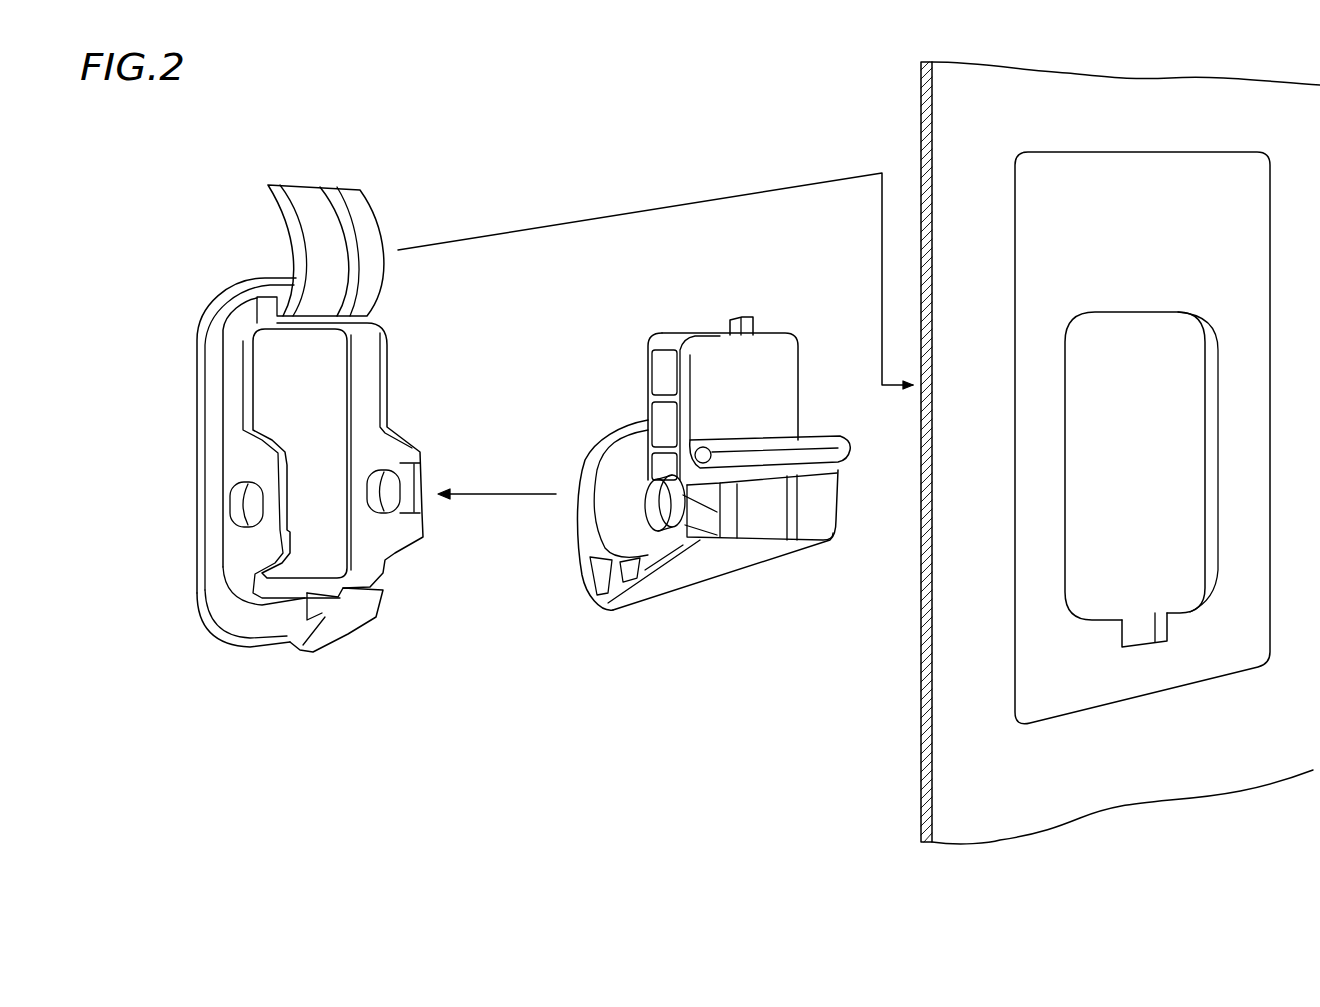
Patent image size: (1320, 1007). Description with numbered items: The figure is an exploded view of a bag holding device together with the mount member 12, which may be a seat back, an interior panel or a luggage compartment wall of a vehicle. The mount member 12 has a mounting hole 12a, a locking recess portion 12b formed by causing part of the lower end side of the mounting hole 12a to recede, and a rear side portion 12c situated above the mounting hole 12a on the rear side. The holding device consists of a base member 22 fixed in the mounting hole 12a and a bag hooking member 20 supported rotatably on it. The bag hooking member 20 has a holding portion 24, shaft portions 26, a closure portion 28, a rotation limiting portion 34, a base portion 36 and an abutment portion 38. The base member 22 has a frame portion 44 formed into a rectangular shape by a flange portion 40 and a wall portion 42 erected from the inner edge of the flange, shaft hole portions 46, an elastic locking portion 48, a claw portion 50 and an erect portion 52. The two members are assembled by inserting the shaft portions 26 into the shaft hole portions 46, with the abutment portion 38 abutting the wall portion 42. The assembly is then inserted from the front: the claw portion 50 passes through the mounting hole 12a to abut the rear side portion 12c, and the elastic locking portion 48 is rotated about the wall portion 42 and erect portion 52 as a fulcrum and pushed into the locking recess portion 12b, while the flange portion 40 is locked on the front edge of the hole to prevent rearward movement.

The mount member 12 is at (1088, 783).
The mounting hole 12a is at (1063, 428).
The locking recess portion 12b is at (1144, 646).
The rear side portion 12c is at (1142, 200).
The bag hooking member 20 is at (670, 646).
The base member 22 is at (296, 687).
The holding portion 24 is at (623, 453).
The shaft portions 26 is at (662, 516).
The closure portion 28 is at (727, 580).
The rotation limiting portion 34 is at (827, 447).
The base portion 36 is at (772, 362).
The abutment portion 38 is at (750, 315).
The flange portion 40 is at (223, 307).
The wall portion 42 is at (233, 363).
The frame portion 44 is at (192, 240).
The shaft hole portions 46 is at (247, 530).
The elastic locking portion 48 is at (347, 633).
The claw portion 50 is at (353, 233).
The erect portion 52 is at (270, 297).